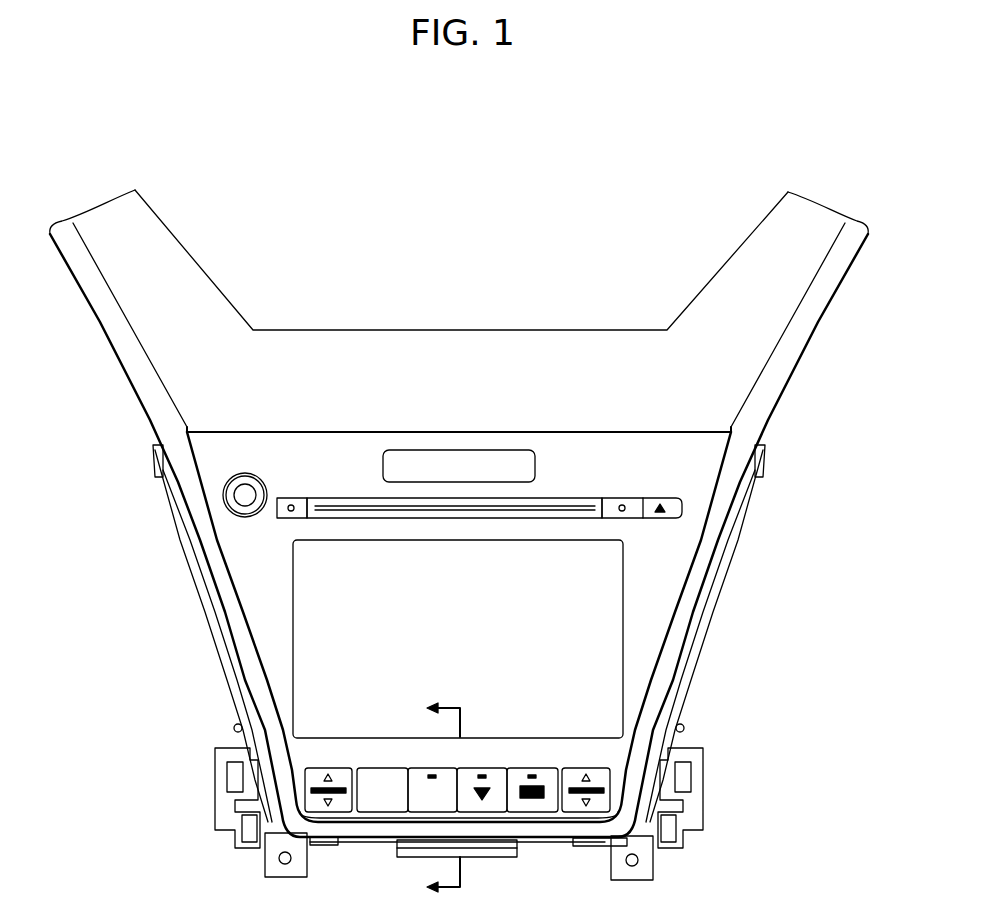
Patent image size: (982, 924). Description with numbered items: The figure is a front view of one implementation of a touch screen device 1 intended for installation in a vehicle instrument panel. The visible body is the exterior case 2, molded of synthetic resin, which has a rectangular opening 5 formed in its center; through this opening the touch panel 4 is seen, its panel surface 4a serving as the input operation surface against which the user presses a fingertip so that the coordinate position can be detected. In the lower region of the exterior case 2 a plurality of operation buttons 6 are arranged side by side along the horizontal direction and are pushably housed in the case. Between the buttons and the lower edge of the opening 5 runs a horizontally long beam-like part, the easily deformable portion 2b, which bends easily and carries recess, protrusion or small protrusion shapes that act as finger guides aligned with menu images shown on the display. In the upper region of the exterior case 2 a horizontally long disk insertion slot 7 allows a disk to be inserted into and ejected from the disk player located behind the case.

The touch screen device 1 is at (572, 283).
The exterior case 2 is at (243, 558).
The easily deformable portion 2b is at (322, 750).
The touch panel 4 is at (580, 648).
The panel surface 4a is at (458, 639).
The opening 5 is at (293, 601).
The operation buttons 6 is at (422, 805).
The disk insertion slot 7 is at (598, 502).